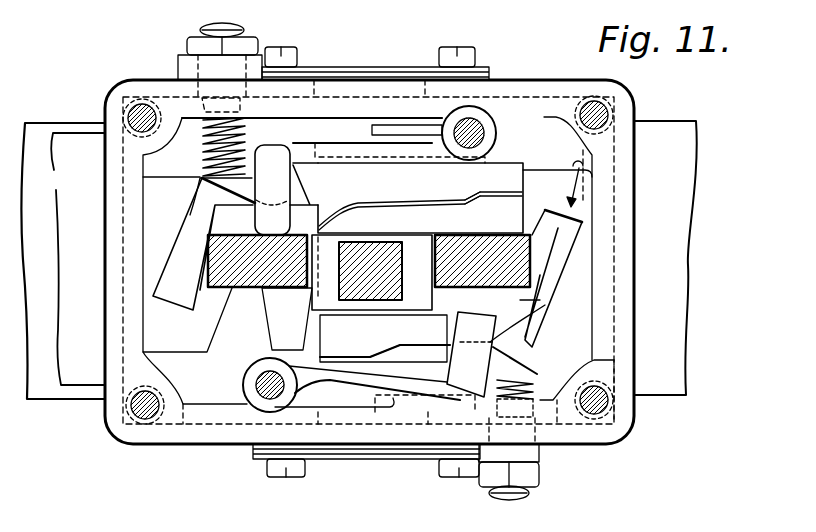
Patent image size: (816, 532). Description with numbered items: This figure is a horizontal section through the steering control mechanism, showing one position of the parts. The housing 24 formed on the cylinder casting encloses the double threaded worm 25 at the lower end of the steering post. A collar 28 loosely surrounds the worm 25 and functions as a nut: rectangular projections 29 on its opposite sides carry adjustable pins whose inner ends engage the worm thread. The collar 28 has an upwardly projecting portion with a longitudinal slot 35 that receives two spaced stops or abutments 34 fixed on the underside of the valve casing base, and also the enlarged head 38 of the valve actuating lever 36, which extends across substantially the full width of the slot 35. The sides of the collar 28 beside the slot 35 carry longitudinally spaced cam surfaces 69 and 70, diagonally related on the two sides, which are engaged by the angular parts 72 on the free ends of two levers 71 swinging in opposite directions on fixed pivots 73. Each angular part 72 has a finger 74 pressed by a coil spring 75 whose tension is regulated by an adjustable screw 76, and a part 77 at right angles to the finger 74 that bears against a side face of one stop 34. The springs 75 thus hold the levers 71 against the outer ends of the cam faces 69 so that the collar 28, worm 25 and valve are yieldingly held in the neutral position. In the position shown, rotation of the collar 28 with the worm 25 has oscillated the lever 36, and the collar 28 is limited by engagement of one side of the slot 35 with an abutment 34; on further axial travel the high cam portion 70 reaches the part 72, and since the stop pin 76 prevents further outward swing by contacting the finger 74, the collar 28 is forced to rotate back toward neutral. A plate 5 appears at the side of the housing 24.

The mounting plate 5 is at (52, 390).
The housing 24 is at (92, 378).
The worm 25 is at (553, 202).
The collar 28 is at (497, 165).
The rectangular projections 29 is at (388, 125).
The stops or abutments 34 is at (270, 290).
The slot 35 is at (540, 301).
The valve actuating lever 36 is at (375, 245).
The enlarged head 38 is at (420, 258).
The cam surfaces 69 is at (352, 207).
The high cam portion 70 is at (470, 199).
The levers 71 is at (354, 155).
The angular parts 72 is at (445, 349).
The fixed pivots 73 is at (487, 128).
The finger 74 is at (205, 185).
The coil spring 75 is at (203, 150).
The adjustable screws 76 is at (236, 31).
The part 77 is at (485, 305).